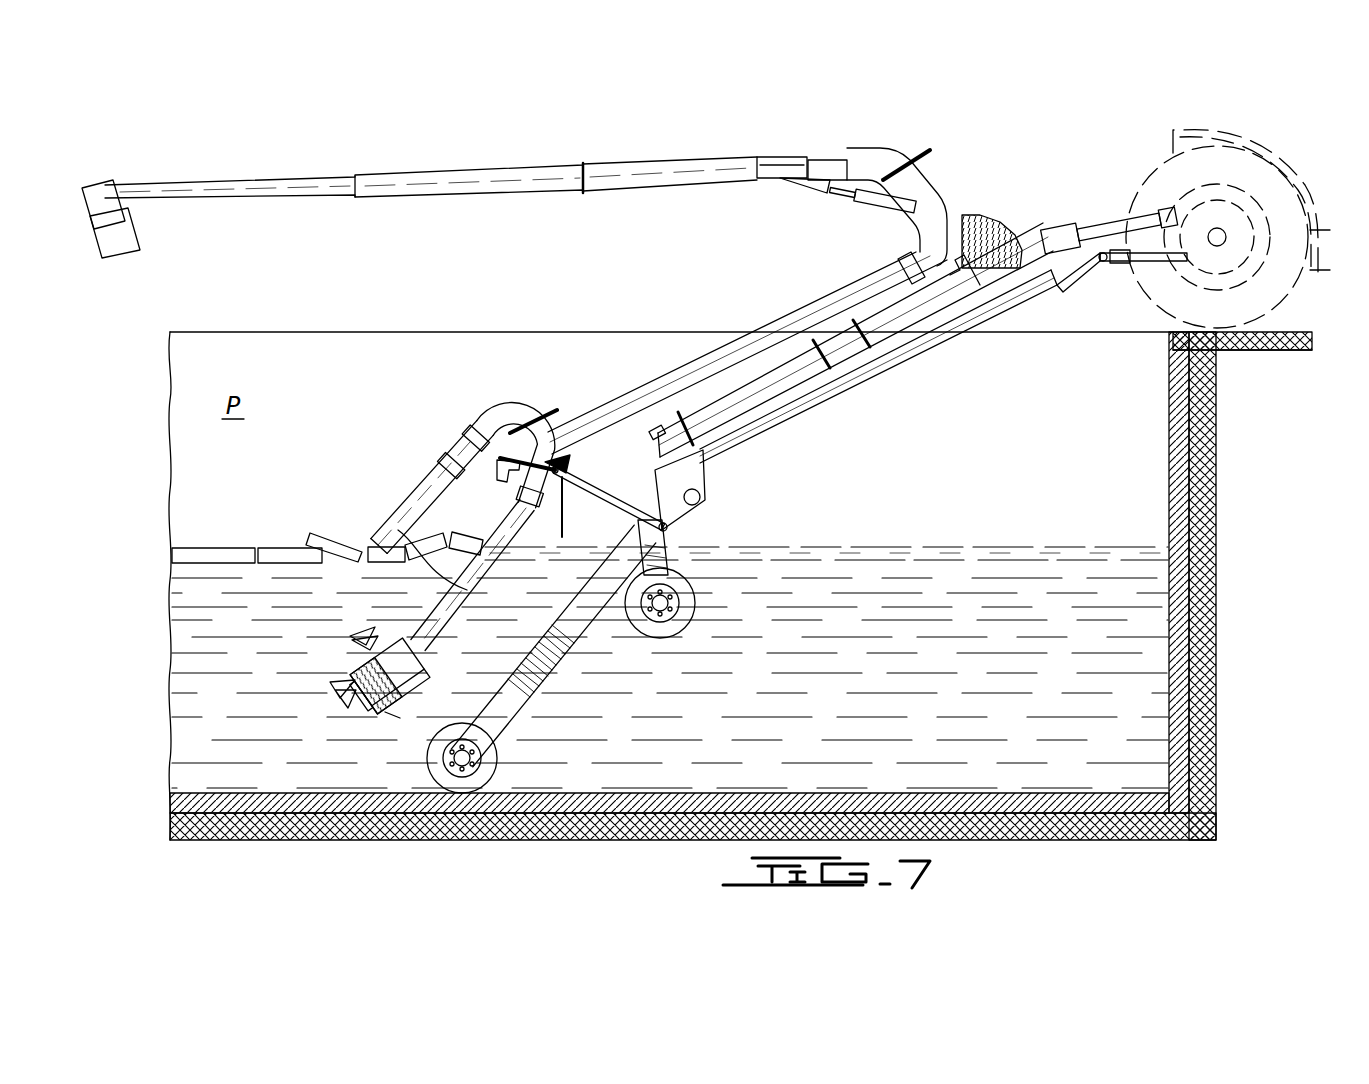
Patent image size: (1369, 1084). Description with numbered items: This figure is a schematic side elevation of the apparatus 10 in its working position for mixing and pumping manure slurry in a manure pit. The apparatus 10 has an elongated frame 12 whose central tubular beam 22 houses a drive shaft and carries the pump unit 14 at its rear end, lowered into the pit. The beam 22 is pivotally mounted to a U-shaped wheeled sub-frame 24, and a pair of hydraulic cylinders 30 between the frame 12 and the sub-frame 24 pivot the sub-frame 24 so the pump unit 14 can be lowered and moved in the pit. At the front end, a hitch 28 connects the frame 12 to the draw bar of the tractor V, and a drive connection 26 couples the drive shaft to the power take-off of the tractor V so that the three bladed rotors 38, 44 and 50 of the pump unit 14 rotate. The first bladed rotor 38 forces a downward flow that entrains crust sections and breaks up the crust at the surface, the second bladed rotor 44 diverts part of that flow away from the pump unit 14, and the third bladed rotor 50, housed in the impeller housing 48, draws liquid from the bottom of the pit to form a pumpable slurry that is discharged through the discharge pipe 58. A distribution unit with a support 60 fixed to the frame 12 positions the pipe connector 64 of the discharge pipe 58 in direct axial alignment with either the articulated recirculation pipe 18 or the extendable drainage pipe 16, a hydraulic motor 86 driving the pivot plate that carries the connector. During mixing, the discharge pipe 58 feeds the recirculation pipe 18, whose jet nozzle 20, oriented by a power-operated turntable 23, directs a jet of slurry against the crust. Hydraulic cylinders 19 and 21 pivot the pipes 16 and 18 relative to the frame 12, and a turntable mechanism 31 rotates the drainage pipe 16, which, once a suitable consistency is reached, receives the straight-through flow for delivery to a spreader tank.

The apparatus 10 is at (1017, 150).
The elongated frame 12 is at (890, 382).
The pump unit 14 is at (275, 741).
The extendable drainage pipe 16 is at (197, 183).
The articulated recirculation pipe 18 is at (552, 412).
The hydraulic cylinder 19 is at (865, 198).
The jet nozzle 20 is at (420, 459).
The hydraulic cylinder 21 is at (486, 417).
The central tubular beam 22 is at (775, 424).
The power-operated turntable 23 is at (558, 408).
The U-shaped wheeled carriage or sub-frame 24 is at (573, 630).
The drive connection 26 is at (1117, 223).
The hitch 28 is at (1052, 280).
The hydraulic cylinders 30 is at (700, 500).
The turntable mechanism 31 is at (925, 150).
The first bladed rotor 38 is at (355, 638).
The second bladed rotor 44 is at (340, 715).
The impeller housing 48 is at (417, 682).
The third bladed rotor 50 is at (392, 716).
The discharge pipe 58 is at (398, 530).
The support 60 is at (570, 460).
The pipe connector 64 is at (497, 472).
The hydraulic motor 86 is at (445, 462).
The tractor V is at (1310, 150).